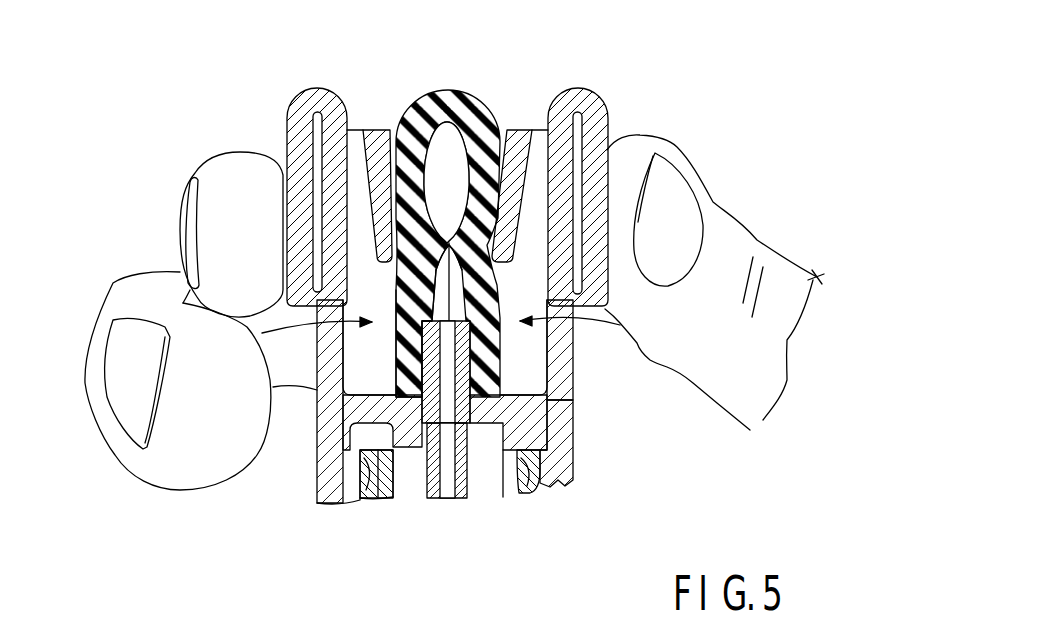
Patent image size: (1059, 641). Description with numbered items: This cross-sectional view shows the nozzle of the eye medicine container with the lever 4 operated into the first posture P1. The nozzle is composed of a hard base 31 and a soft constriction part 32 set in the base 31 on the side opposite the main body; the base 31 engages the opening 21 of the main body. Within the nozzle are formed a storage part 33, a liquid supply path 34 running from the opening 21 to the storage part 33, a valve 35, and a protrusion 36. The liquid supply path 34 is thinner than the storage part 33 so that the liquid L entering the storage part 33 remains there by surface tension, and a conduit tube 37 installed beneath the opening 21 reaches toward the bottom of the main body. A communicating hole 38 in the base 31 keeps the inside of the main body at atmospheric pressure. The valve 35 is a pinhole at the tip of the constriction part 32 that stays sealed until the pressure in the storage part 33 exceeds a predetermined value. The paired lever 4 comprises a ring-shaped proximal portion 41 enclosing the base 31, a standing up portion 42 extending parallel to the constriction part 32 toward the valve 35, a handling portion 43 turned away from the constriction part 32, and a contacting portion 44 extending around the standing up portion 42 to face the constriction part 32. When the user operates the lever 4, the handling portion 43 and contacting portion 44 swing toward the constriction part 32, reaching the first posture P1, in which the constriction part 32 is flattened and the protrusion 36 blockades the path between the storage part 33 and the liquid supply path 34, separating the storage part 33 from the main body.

The lever 4 is at (307, 357).
The opening 21 is at (530, 483).
The base 31 is at (503, 443).
The constriction part 32 is at (407, 285).
The storage part 33 is at (438, 130).
The liquid supply path 34 is at (447, 368).
The valve 35 is at (444, 148).
The protrusion 36 is at (452, 243).
The conduit tube 37 is at (467, 480).
The communicating hole 38 is at (352, 450).
The proximal portion 41 is at (567, 453).
The standing up portion 42 is at (336, 357).
The handling portion 43 is at (290, 147).
The contacting portion 44 is at (378, 130).
The liquid L is at (458, 166).
The first posture P1 is at (653, 53).